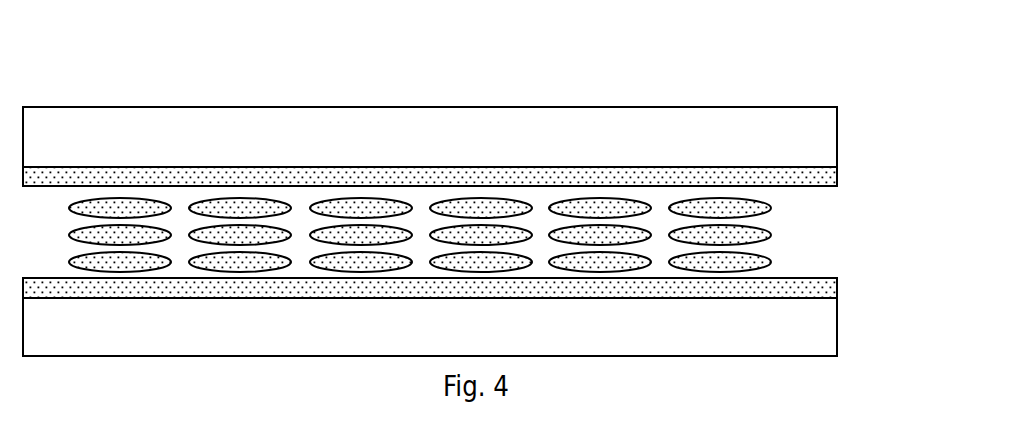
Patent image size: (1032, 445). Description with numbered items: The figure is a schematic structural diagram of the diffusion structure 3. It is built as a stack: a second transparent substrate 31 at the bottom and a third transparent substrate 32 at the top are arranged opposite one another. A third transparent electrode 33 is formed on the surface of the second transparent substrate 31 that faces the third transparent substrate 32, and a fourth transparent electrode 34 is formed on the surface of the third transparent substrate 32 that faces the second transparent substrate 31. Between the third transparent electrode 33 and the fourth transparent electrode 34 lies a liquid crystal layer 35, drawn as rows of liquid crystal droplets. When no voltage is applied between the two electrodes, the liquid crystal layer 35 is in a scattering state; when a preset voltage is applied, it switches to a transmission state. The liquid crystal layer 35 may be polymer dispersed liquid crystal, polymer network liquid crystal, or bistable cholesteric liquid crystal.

The diffusion structure 3 is at (462, 73).
The second transparent substrate 31 is at (795, 322).
The third transparent substrate 32 is at (797, 132).
The third transparent electrode 33 is at (795, 286).
The fourth transparent electrode 34 is at (797, 173).
The liquid crystal layer 35 is at (723, 233).